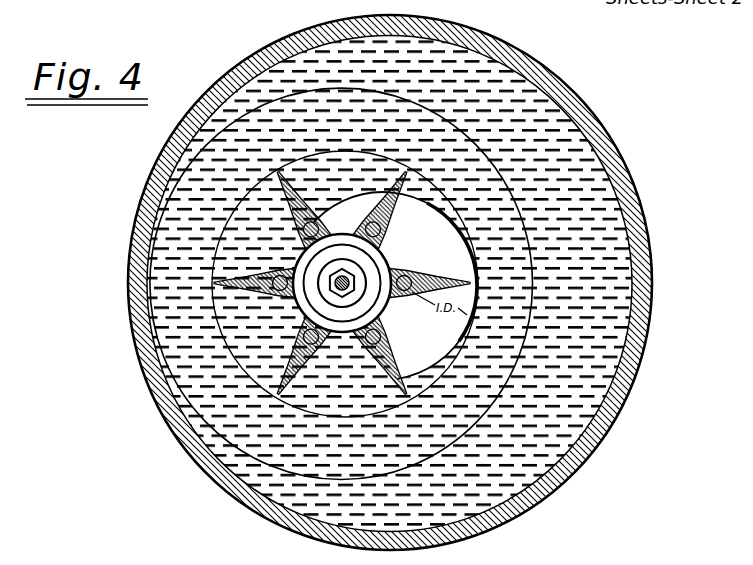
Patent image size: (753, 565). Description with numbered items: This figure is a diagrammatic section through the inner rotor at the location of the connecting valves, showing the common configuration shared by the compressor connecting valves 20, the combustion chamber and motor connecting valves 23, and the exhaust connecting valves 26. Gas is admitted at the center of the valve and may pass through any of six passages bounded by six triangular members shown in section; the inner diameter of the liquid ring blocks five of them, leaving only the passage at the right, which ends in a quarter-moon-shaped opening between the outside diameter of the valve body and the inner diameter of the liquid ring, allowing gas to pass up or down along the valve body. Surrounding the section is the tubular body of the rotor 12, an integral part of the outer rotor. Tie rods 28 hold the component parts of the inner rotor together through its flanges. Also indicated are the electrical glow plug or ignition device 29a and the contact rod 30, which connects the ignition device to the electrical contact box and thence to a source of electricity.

The tubular body of the rotor 12 is at (642, 223).
The compressor connecting valves 20 is at (345, 284).
The combustion chamber and motor connecting valves 23 is at (345, 284).
The exhaust connecting valves 26 is at (467, 317).
The tie rods 28 is at (366, 341).
The electrical glow plug or ignition device 29a is at (354, 275).
The contact rod 30 is at (304, 245).